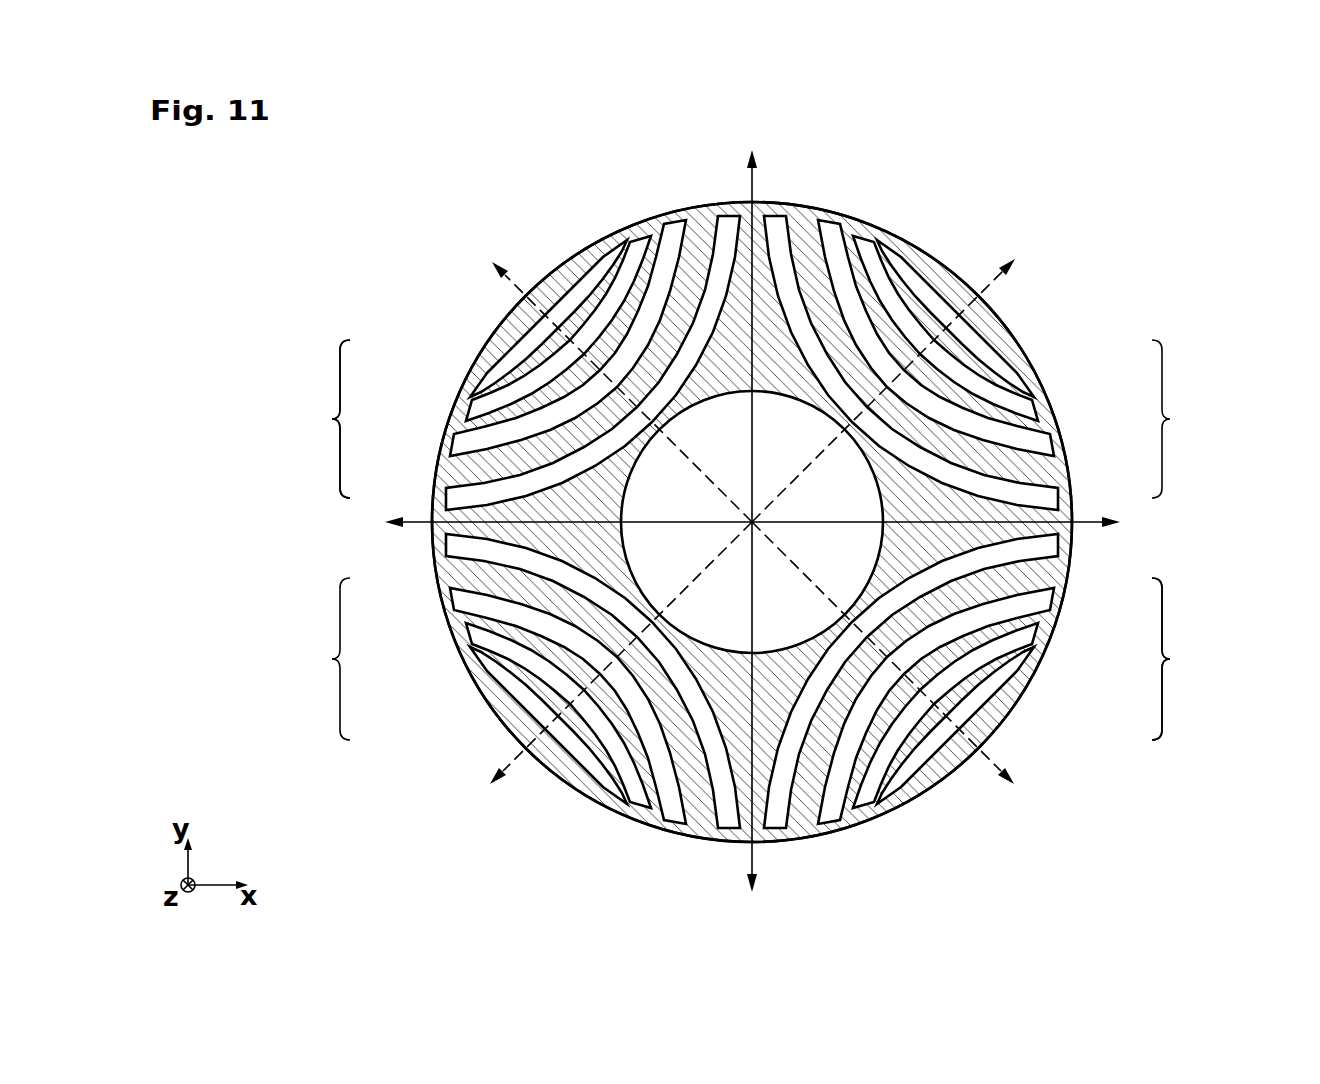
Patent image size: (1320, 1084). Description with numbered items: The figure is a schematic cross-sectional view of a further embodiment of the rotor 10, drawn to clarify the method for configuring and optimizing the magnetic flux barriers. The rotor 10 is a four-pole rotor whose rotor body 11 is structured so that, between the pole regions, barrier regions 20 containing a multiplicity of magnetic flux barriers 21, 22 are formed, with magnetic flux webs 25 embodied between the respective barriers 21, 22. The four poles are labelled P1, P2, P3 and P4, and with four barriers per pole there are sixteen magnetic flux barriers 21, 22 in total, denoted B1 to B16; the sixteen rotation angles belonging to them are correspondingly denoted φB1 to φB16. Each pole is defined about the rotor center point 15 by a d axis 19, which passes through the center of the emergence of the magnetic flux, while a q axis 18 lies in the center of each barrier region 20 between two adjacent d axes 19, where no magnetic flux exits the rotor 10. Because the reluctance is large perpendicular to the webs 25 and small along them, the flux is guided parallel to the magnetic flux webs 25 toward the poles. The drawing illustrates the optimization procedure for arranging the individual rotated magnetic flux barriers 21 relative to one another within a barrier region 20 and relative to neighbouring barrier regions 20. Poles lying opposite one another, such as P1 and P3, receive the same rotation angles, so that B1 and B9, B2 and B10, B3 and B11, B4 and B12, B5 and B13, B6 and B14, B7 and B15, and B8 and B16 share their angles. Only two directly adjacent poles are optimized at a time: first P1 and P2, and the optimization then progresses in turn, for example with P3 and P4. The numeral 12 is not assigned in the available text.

The rotor 10 is at (408, 230).
The rotor body 11 is at (565, 280).
The rotor body 12 is at (885, 705).
The rotor center point 15 is at (885, 705).
The q axis 18 is at (520, 290).
The d axis 19 is at (750, 188).
The barrier region 20 is at (493, 319).
The magnetic flux barrier 21 is at (754, 540).
The magnetic flux barrier 22 is at (751, 540).
The magnetic flux web 25 is at (680, 737).
The magnetic flux barrier B1 is at (1004, 355).
The magnetic flux barrier B2 is at (1017, 398).
The magnetic flux barrier B3 is at (1024, 446).
The magnetic flux barrier B4 is at (1034, 495).
The magnetic flux barrier B5 is at (500, 355).
The magnetic flux barrier B6 is at (487, 398).
The magnetic flux barrier B7 is at (480, 446).
The magnetic flux barrier B8 is at (470, 495).
The magnetic flux barrier B9 is at (500, 688).
The magnetic flux barrier B10 is at (488, 648).
The magnetic flux barrier B11 is at (478, 612).
The magnetic flux barrier B12 is at (462, 572).
The magnetic flux barrier B13 is at (1004, 688).
The magnetic flux barrier B14 is at (1016, 648).
The magnetic flux barrier B15 is at (1026, 612).
The magnetic flux barrier B16 is at (1042, 572).
The pole P1 is at (1023, 253).
The pole P2 is at (484, 253).
The pole P3 is at (483, 793).
The pole P4 is at (1022, 791).